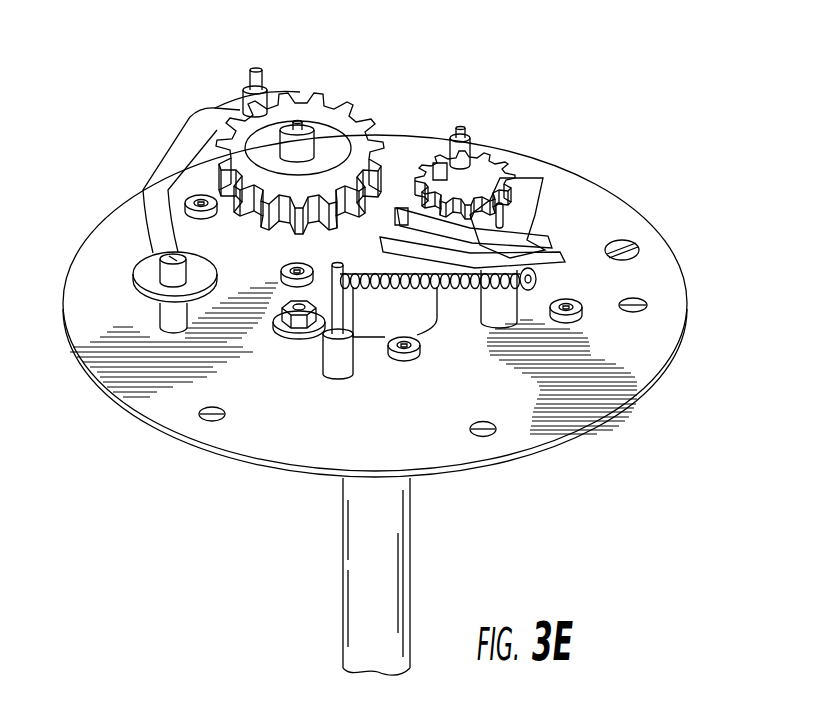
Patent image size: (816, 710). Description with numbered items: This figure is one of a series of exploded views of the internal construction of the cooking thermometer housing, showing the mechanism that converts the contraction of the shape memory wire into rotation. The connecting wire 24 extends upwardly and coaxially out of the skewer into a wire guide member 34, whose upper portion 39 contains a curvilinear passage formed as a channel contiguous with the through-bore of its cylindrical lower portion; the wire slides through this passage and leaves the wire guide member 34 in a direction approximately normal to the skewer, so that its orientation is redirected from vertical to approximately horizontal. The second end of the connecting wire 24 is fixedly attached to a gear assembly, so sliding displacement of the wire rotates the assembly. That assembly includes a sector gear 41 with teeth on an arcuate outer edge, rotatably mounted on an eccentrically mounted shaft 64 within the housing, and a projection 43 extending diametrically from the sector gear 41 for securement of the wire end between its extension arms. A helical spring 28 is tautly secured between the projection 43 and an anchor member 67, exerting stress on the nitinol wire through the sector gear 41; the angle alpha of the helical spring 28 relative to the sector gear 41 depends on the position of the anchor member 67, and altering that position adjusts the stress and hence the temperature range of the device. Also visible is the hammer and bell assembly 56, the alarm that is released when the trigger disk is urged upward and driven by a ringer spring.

The connecting wire 24 is at (465, 265).
The helical spring 28 is at (457, 296).
The wire guide member 34 is at (382, 320).
The upper portion 39 is at (390, 262).
The sector gear 41 is at (490, 190).
The projection 43 is at (532, 238).
The hammer and bell assembly 56 is at (213, 100).
The eccentrically mounted shaft 64 is at (503, 205).
The anchor member 67 is at (337, 360).